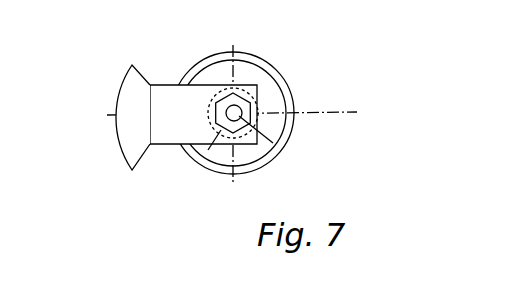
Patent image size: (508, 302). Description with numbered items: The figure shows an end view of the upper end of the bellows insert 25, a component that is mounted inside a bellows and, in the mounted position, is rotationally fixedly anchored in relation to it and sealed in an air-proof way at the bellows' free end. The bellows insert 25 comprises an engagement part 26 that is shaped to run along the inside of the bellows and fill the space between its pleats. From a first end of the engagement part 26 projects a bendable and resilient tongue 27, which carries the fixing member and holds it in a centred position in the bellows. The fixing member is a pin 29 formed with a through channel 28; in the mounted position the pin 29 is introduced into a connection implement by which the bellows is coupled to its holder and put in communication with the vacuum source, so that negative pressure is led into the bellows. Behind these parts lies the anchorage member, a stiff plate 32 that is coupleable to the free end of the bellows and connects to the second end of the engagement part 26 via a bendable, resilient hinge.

The bellows insert 25 is at (250, 103).
The engagement part 26 is at (118, 133).
The tongue 27 is at (175, 97).
The through channel 28 is at (345, 70).
The pin 29 is at (198, 172).
The plate 32 is at (282, 57).